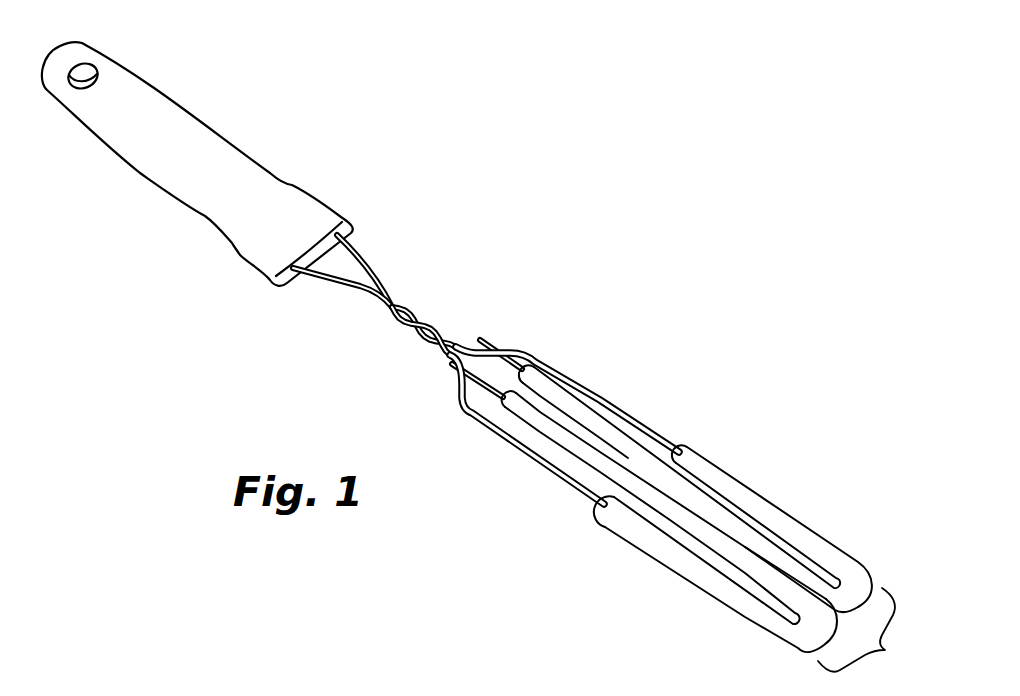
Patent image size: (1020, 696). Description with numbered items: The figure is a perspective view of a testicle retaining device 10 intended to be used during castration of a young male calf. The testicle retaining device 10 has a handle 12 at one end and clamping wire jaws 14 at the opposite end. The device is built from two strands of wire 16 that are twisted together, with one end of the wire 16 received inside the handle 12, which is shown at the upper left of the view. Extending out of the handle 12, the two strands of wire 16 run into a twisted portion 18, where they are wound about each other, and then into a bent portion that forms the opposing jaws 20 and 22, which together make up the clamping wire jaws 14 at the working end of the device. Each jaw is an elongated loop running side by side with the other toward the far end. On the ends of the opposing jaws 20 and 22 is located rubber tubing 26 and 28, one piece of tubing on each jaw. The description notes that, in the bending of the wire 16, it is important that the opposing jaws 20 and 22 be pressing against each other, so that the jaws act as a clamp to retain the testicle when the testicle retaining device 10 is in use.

The testicle retaining device 10 is at (632, 261).
The handle 12 is at (201, 123).
The clamping wire jaws 14 is at (867, 630).
The wire 16 is at (348, 283).
The twisted portion 18 is at (415, 330).
The opposing jaw 20 is at (760, 497).
The opposing jaw 22 is at (702, 588).
The rubber tubing 26 is at (686, 448).
The rubber tubing 28 is at (600, 517).